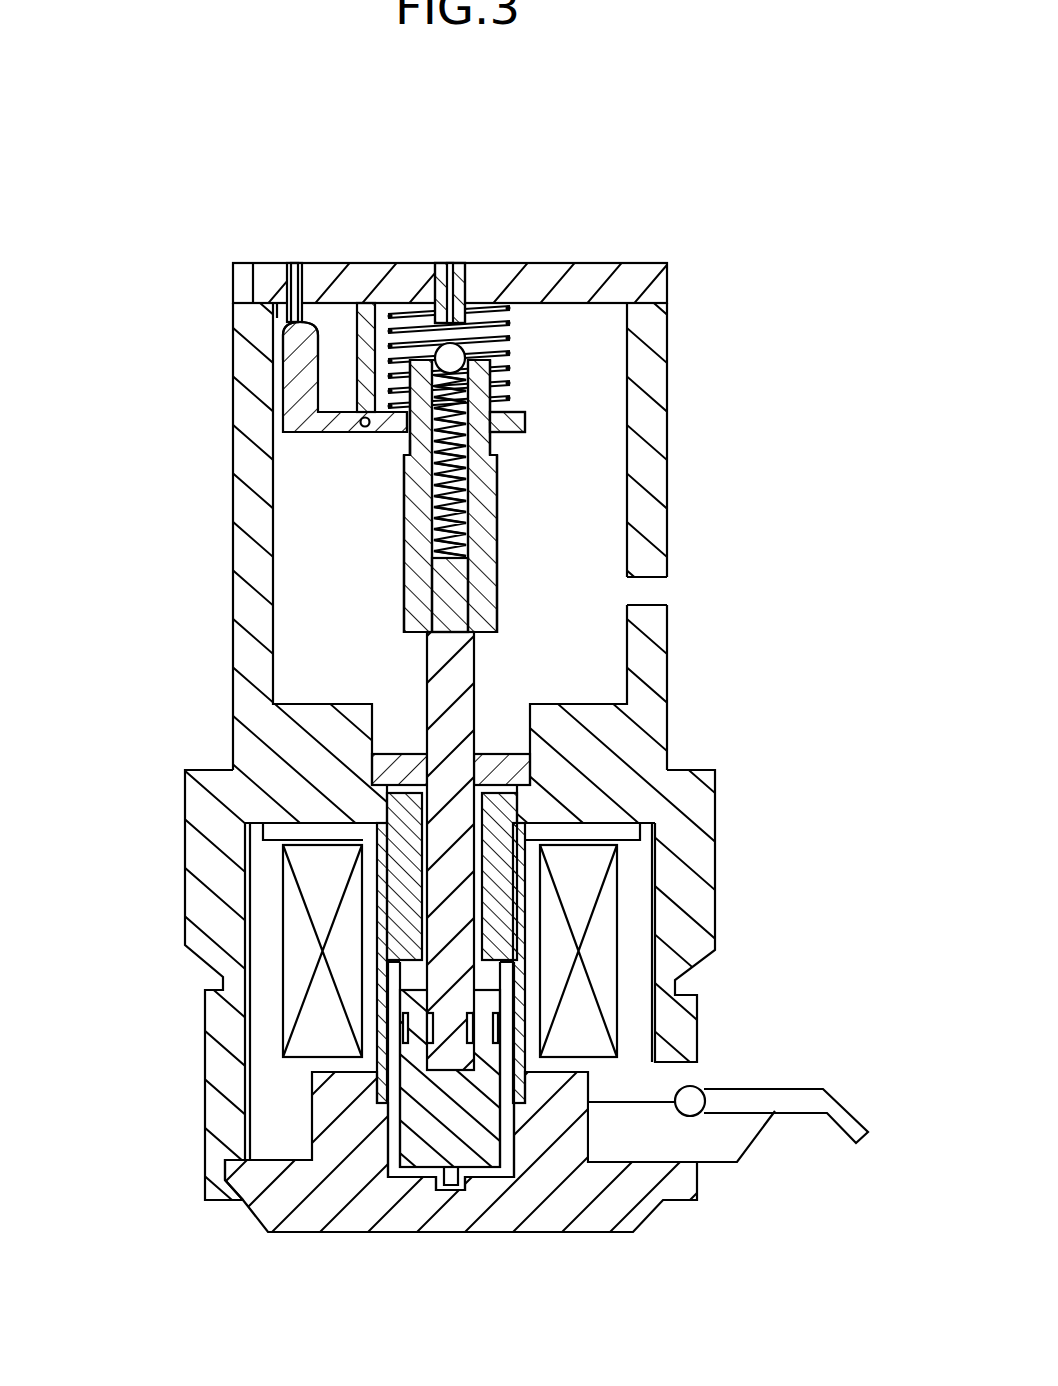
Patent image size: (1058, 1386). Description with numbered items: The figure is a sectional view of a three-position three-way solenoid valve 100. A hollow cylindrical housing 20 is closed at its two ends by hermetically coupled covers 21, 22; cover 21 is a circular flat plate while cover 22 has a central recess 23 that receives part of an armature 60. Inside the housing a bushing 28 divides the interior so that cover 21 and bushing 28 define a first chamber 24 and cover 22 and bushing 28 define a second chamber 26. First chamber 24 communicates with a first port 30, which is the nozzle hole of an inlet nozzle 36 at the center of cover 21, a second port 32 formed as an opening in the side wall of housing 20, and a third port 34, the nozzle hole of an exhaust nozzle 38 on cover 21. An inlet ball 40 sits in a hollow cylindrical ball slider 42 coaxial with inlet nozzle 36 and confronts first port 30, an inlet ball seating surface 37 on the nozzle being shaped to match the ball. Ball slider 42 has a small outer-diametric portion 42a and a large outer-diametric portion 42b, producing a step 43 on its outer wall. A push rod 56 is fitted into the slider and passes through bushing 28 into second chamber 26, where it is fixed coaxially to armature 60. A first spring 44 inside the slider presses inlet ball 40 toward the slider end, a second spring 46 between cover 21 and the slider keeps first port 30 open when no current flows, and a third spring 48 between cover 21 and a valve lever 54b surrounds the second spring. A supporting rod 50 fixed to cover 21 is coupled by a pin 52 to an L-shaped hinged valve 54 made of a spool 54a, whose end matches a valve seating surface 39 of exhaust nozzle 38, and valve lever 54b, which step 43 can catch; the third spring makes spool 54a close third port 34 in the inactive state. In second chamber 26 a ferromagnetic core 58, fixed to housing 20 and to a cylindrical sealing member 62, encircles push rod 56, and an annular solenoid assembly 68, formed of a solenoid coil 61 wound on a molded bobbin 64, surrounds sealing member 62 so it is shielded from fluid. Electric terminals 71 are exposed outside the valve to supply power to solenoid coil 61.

The solenoid valve 100 is at (696, 154).
The housing 20 is at (478, 738).
The cover 21 is at (490, 268).
The cover 22 is at (343, 1187).
The recess 23 is at (517, 1147).
The first chamber 24 is at (600, 380).
The second chamber 26 is at (500, 975).
The bushing 28 is at (372, 768).
The first port 30 is at (450, 300).
The second port 32 is at (648, 590).
The third port 34 is at (301, 300).
The inlet nozzle 36 is at (466, 300).
The inlet ball seating surface 37 is at (425, 302).
The exhaust nozzle 38 is at (285, 298).
The valve seating surface 39 is at (236, 268).
The inlet ball 40 is at (455, 345).
The ball slider 42 is at (469, 471).
The small outer-diametric portion 42a is at (490, 366).
The large outer-diametric portion 42b is at (490, 527).
The step 43 is at (404, 457).
The first spring 44 is at (440, 548).
The second spring 46 is at (505, 340).
The third spring 48 is at (520, 412).
The supporting rod 50 is at (366, 302).
The pin 52 is at (362, 426).
The hinged valve 54 is at (246, 396).
The spool 54a is at (300, 345).
The valve lever 54b is at (320, 432).
The push rod 56 is at (470, 663).
The core 58 is at (510, 873).
The armature 60 is at (482, 1155).
The solenoid coil 61 is at (307, 1045).
The sealing member 62 is at (493, 952).
The bobbin 64 is at (267, 1018).
The solenoid assembly 68 is at (248, 960).
The electric terminals 71 is at (741, 1128).